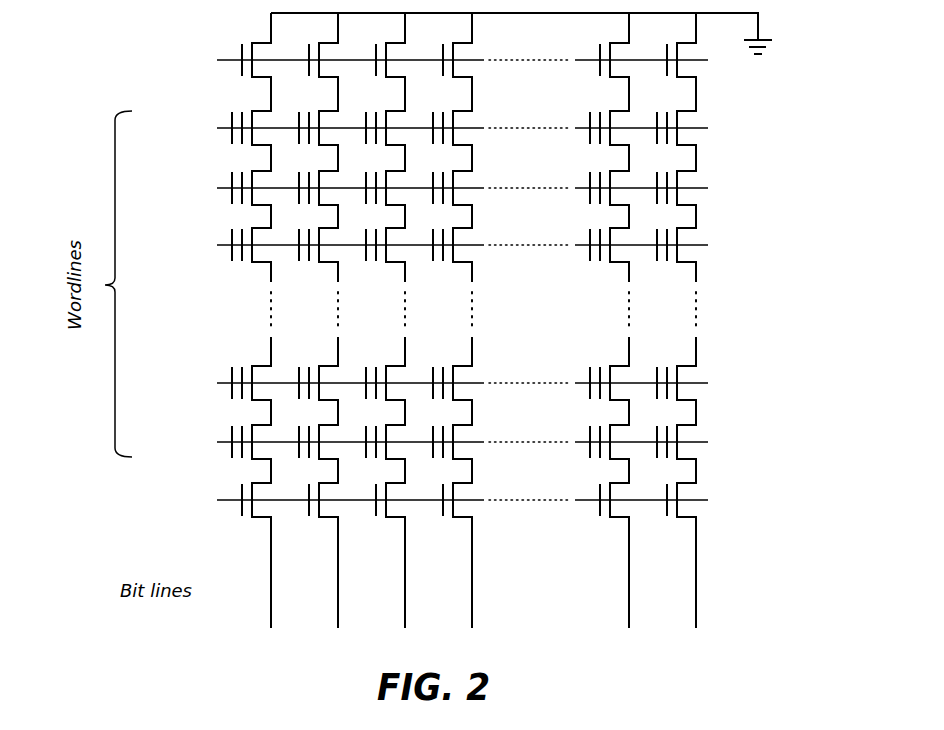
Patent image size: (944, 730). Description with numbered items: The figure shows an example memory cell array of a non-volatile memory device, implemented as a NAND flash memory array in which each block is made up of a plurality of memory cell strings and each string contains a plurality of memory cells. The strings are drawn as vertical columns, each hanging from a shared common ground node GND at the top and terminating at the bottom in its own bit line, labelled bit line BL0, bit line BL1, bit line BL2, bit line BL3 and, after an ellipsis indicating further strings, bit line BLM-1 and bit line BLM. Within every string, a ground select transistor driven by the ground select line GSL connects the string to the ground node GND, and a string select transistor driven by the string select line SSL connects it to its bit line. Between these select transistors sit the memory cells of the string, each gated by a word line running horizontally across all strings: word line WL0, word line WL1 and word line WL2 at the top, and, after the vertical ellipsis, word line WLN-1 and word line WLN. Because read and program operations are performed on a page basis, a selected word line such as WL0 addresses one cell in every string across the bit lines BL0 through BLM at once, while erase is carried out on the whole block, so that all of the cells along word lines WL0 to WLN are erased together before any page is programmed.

The common source line / ground GND is at (550, 36).
The ground select line GSL is at (394, 62).
The word line 0 WL0 is at (434, 130).
The word line 1 WL1 is at (434, 188).
The word line 2 WL2 is at (434, 245).
The word line N-1 WLN-1 is at (423, 383).
The word line N WLN is at (432, 442).
The string select line SSL is at (401, 505).
The bit line 0 BL0 is at (259, 320).
The bit line 1 BL1 is at (326, 320).
The bit line 2 BL2 is at (393, 320).
The bit line 3 BL3 is at (460, 320).
The bit line M-1 BLM-1 is at (617, 320).
The bit line M BLM is at (684, 320).